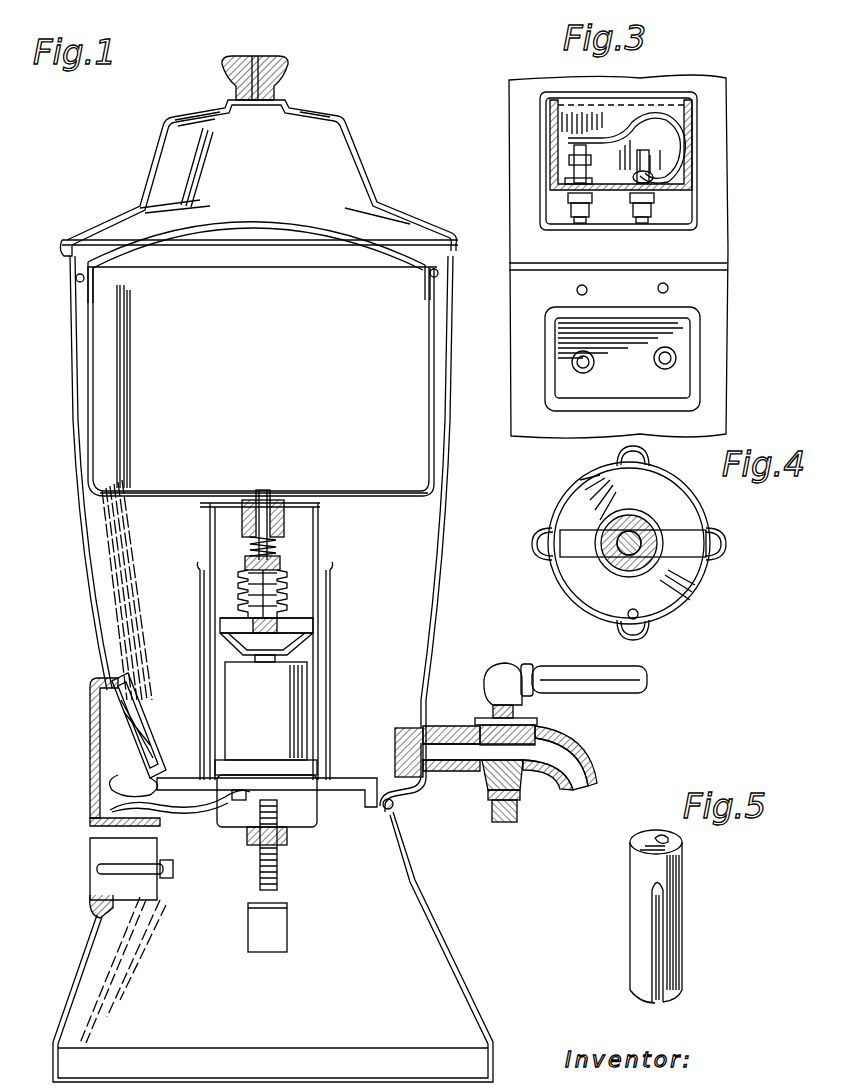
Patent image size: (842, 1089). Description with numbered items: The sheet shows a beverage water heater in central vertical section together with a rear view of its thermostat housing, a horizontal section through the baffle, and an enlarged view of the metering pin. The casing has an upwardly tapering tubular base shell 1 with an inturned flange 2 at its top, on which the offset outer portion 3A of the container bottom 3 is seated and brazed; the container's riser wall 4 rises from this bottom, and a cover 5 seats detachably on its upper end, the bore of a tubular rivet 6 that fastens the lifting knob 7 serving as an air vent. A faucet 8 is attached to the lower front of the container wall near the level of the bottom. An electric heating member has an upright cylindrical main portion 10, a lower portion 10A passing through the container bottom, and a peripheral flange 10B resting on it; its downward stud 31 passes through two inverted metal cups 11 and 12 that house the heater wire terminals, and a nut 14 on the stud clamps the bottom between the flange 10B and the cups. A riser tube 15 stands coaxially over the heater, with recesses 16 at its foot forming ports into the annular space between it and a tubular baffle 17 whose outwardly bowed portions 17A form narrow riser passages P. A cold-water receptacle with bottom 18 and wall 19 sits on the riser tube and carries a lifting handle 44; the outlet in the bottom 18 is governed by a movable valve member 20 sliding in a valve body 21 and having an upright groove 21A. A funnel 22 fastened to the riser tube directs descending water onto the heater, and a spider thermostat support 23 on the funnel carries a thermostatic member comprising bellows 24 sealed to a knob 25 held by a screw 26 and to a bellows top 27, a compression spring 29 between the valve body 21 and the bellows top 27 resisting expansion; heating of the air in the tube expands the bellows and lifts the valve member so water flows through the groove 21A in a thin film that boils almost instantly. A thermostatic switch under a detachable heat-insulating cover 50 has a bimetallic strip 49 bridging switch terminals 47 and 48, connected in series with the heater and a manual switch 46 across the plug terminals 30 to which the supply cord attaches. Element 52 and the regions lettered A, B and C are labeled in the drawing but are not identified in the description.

In FIG. 1, the tubular base shell 1 is at (413, 882).
In FIG. 1, the inturned flange 2 is at (378, 812).
In FIG. 1, the container bottom 3 is at (362, 778).
In FIG. 1, the outer portion of container bottom 3A is at (396, 800).
In FIG. 1, the riser wall 4 is at (454, 333).
In FIG. 1, the cover 5 is at (360, 172).
In FIG. 1, the tubular rivet 6 is at (255, 60).
In FIG. 1, the lifting knob 7 is at (280, 70).
In FIG. 1, the faucet 8 is at (545, 745).
In FIG. 1, the electric heating member 10 is at (266, 711).
In FIG. 4, the electric heating member 10 is at (704, 452).
In FIG. 1, the lower portion of heating member 10A is at (281, 798).
In FIG. 1, the peripheral flange 10B is at (318, 768).
In FIG. 1, the lower metal cup 11 is at (318, 821).
In FIG. 1, the upper metal cup 12 is at (322, 797).
In FIG. 1, the nut 14 is at (288, 840).
In FIG. 1, the riser tube 15 is at (319, 556).
In FIG. 4, the riser tube 15 is at (650, 622).
In FIG. 1, the recesses 16 is at (330, 760).
In FIG. 1, the tubular baffle 17 is at (331, 632).
In FIG. 4, the tubular baffle 17 is at (578, 493).
In FIG. 4, the outwardly bowed upright portions 17A is at (616, 459).
In FIG. 1, the receptacle bottom 18 is at (392, 497).
In FIG. 1, the receptacle wall 19 is at (261, 382).
In FIG. 1, the movable valve member 20 is at (243, 506).
In FIG. 1, the valve body 21 is at (261, 492).
In FIG. 4, the valve body 21 is at (615, 558).
In FIG. 5, the valve body 21 is at (640, 887).
In FIG. 4, the upright groove 21A is at (665, 560).
In FIG. 5, the upright groove 21A is at (668, 964).
In FIG. 1, the funnel 22 is at (228, 645).
In FIG. 4, the funnel 22 is at (692, 523).
In FIG. 1, the thermostat support 23 is at (300, 626).
In FIG. 4, the thermostat support 23 is at (700, 545).
In FIG. 1, the bellows portion 24 is at (288, 584).
In FIG. 1, the knob 25 is at (253, 626).
In FIG. 1, the screw 26 is at (262, 637).
In FIG. 1, the bellows top 27 is at (288, 571).
In FIG. 1, the compression spring 29 is at (246, 541).
In FIG. 1, the plug terminals 30 is at (106, 863).
In FIG. 3, the plug terminals 30 is at (576, 366).
In FIG. 1, the stud 31 is at (279, 873).
In FIG. 1, the handle 44 is at (398, 248).
In FIG. 1, the manual switch 46 is at (288, 928).
In FIG. 3, the switch terminal 47 is at (590, 202).
In FIG. 1, the switch terminal 48 is at (152, 777).
In FIG. 3, the switch terminal 48 is at (656, 212).
In FIG. 1, the bimetallic strip 49 is at (146, 736).
In FIG. 3, the bimetallic strip 49 is at (638, 114).
In FIG. 1, the switch cover 50 is at (90, 744).
In FIG. 1, the stem cap 52 is at (271, 493).
In FIG. 1, the space A is at (310, 688).
In FIG. 1, the space B is at (333, 706).
In FIG. 1, the chamber C is at (397, 598).
In FIG. 1, the riser passages P is at (331, 653).
In FIG. 4, the riser passages P is at (553, 563).